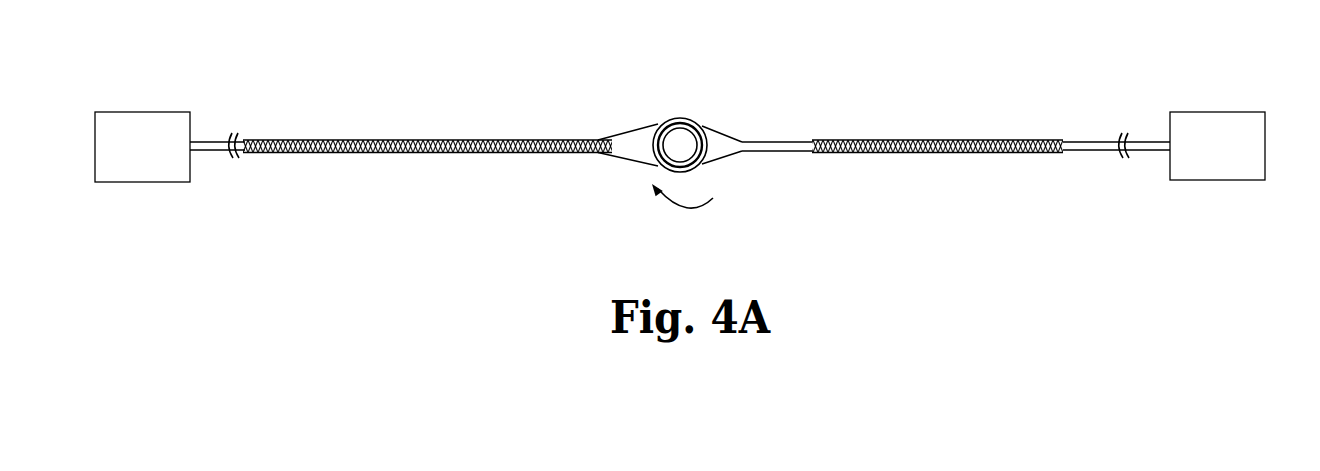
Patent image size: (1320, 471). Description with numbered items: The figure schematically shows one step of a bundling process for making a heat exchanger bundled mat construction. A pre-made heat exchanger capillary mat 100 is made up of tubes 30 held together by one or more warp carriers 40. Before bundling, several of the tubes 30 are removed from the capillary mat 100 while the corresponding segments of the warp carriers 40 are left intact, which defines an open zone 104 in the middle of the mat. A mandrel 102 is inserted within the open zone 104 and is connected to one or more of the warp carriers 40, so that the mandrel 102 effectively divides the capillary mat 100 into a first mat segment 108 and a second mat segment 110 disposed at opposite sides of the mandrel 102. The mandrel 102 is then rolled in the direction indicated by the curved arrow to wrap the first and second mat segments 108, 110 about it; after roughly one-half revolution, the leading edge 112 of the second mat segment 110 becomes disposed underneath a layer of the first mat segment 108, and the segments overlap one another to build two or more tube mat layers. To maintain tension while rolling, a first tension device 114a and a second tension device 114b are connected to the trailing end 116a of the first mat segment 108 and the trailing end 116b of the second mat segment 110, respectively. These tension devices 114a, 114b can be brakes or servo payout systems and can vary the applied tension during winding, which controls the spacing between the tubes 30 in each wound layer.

The heat exchanger capillary mat 100 is at (696, 133).
The mandrel 102 is at (693, 125).
The open zone 104 is at (720, 156).
The first mat segment 108 is at (487, 153).
The second mat segment 110 is at (975, 153).
The leading edge 112 is at (800, 153).
The first tension device 114a is at (142, 134).
The second tension device 114b is at (1217, 135).
The trailing end 116a is at (193, 141).
The trailing end 116b is at (1168, 141).
The tubes 30 is at (436, 140).
The warp carriers 40 is at (643, 163).